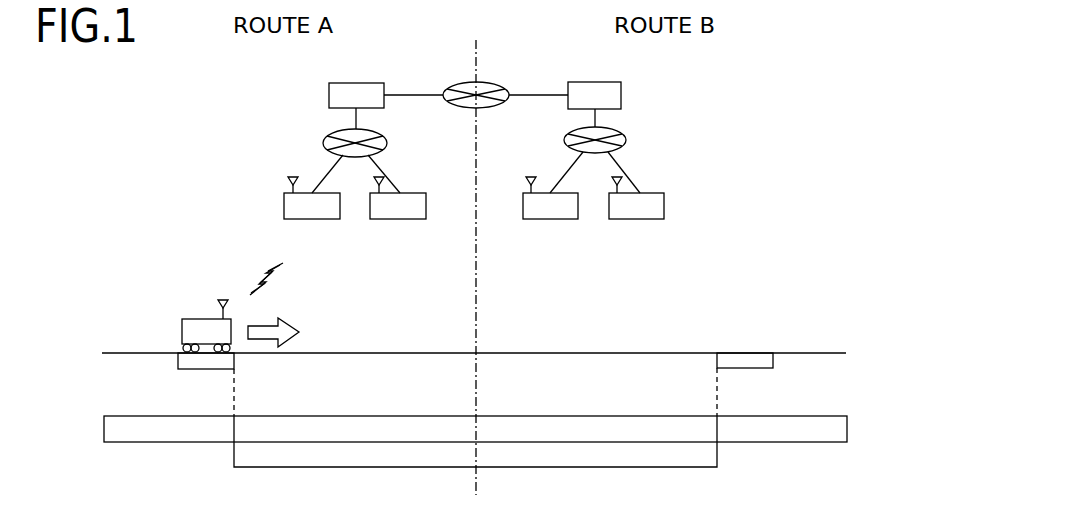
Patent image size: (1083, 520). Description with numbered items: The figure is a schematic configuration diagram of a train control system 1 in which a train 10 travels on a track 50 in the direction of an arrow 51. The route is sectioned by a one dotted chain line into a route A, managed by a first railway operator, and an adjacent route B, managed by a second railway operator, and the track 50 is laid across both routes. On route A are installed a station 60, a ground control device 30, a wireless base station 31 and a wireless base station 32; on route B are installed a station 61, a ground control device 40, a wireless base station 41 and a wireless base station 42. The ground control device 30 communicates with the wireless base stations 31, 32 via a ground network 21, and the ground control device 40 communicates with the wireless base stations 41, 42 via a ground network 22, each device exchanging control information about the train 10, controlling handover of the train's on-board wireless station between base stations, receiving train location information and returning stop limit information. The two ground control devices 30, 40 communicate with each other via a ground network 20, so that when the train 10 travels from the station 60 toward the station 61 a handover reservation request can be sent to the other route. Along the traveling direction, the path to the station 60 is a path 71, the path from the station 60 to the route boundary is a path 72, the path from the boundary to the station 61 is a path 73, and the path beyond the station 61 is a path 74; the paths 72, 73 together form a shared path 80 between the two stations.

The train control system 1 is at (474, 261).
The train 10 is at (185, 316).
The ground network 20 is at (491, 76).
The ground network 21 is at (332, 126).
The ground network 22 is at (621, 124).
The ground control device 30 is at (338, 76).
The wireless base station 31 is at (313, 223).
The wireless base station 32 is at (400, 223).
The ground control device 40 is at (616, 76).
The wireless base station 41 is at (553, 223).
The wireless base station 42 is at (641, 223).
The track 50 is at (474, 332).
The arrow 51 is at (291, 315).
The station 60 is at (182, 376).
The station 61 is at (769, 377).
The path 71 is at (475, 450).
The path 72 is at (381, 394).
The path 73 is at (606, 394).
The path 74 is at (808, 463).
The shared path 80 is at (475, 441).